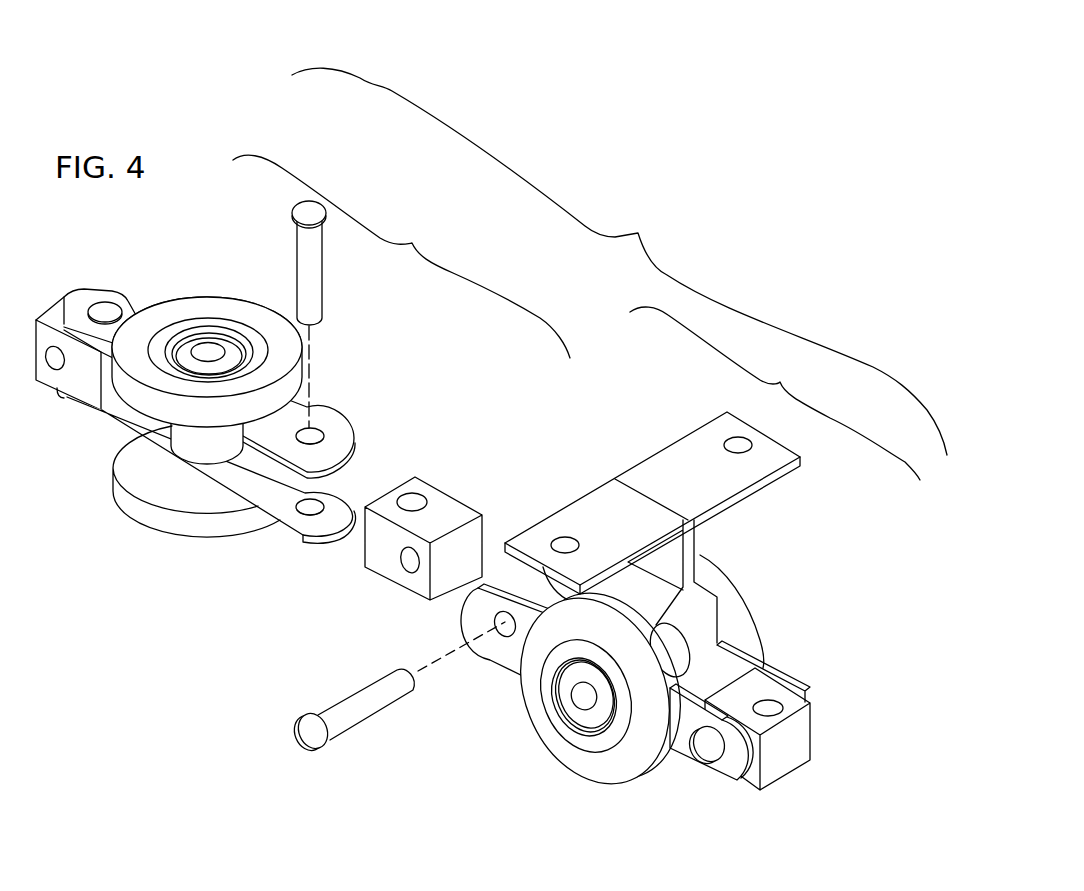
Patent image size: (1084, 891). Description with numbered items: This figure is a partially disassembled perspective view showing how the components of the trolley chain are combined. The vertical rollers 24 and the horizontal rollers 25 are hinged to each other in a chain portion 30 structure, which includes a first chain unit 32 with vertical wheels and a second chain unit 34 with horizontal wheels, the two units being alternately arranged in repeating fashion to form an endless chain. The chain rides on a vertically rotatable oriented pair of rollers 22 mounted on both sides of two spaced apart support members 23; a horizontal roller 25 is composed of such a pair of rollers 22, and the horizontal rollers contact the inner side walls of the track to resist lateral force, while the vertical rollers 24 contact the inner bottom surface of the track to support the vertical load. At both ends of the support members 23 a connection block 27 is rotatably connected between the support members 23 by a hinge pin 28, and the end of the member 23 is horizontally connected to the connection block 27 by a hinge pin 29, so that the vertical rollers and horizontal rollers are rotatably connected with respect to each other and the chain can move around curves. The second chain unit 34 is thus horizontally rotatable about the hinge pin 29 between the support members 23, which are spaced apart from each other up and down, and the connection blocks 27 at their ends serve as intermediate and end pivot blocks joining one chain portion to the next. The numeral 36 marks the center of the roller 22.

The roller 22 is at (217, 300).
The support member 23 is at (350, 453).
The vertical roller 24 is at (505, 742).
The horizontal roller 25 is at (137, 537).
The connection block 27 is at (90, 390).
The hinge pin 28 is at (365, 712).
The hinge pin 29 is at (318, 283).
The chain portion 30 is at (619, 261).
The first chain unit 32 is at (775, 393).
The second chain unit 34 is at (401, 256).
The pulley axle center 36 is at (583, 692).